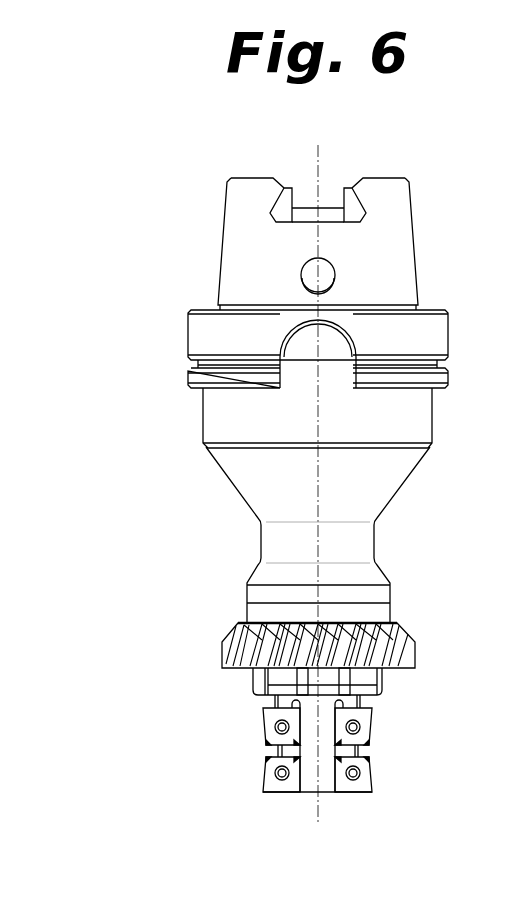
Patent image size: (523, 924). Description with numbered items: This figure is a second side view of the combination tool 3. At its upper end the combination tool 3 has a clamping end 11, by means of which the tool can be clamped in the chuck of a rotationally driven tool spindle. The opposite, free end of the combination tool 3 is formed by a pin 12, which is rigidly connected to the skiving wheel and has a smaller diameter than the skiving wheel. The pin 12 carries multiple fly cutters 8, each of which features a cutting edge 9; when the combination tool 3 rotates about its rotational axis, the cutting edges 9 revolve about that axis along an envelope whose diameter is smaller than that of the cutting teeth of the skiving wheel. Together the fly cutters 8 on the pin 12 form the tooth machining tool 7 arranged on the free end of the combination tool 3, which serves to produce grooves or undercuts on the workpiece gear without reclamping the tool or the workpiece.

The combination tool 3 is at (170, 429).
The clamping end 11 is at (243, 243).
The tooth machining tool 7 is at (226, 783).
The fly cutters 8 is at (270, 715).
The cutting edge 9 is at (268, 762).
The pin 12 is at (308, 778).